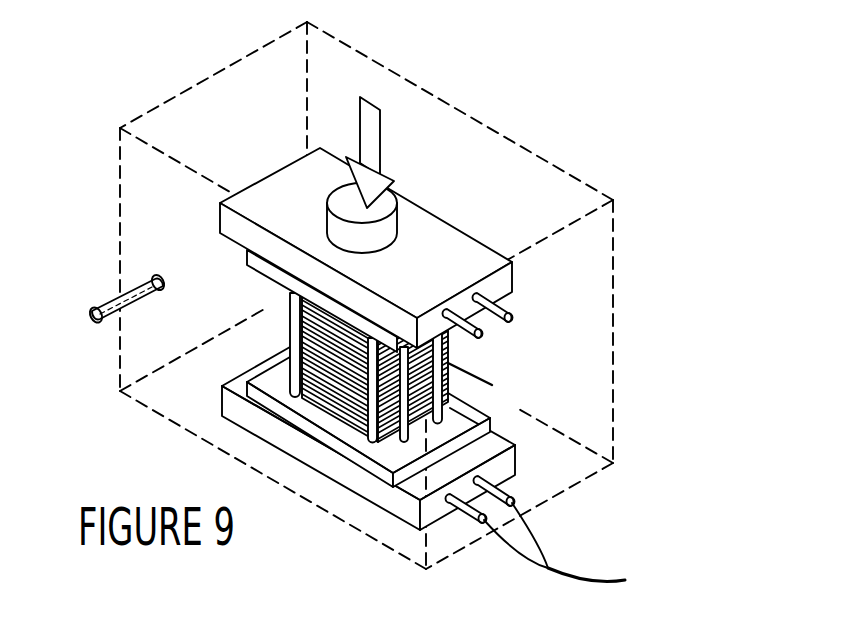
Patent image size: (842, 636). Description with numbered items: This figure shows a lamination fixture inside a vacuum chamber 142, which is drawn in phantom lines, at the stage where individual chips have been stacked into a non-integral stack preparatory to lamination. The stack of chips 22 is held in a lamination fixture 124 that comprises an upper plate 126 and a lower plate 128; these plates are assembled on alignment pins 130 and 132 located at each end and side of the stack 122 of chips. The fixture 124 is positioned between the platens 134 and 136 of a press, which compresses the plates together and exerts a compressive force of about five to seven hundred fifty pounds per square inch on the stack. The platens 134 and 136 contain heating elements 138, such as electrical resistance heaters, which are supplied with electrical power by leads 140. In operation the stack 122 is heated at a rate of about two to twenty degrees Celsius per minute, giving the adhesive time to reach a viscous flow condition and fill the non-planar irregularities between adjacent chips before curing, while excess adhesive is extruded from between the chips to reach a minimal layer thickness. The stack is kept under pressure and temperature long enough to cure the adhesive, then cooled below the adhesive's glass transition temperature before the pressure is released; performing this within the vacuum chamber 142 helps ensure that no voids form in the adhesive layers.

The stack of chips 22 is at (450, 412).
The stack of chips 122 is at (572, 330).
The lamination fixture 124 is at (460, 206).
The upper plate 126 is at (253, 267).
The lower plate 128 is at (255, 372).
The alignment pin 130 is at (372, 425).
The alignment pin 132 is at (290, 382).
The platen 134 is at (478, 255).
The platen 136 is at (402, 512).
The heating elements 138 is at (515, 280).
The leads 140 is at (565, 567).
The vacuum chamber 142 is at (415, 105).